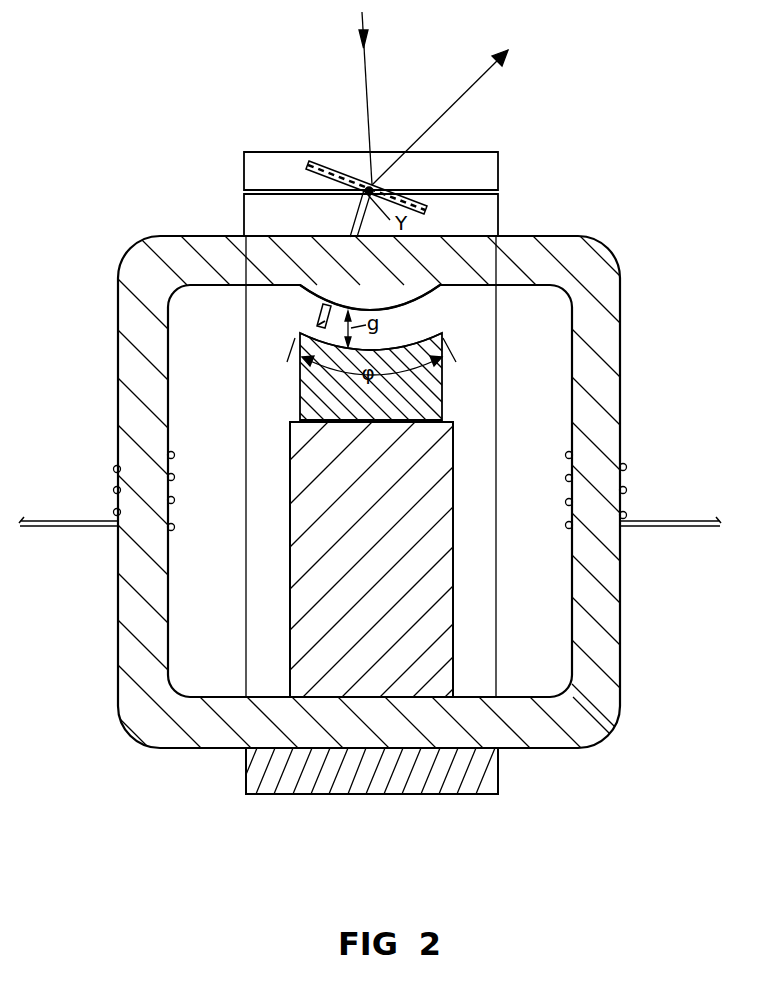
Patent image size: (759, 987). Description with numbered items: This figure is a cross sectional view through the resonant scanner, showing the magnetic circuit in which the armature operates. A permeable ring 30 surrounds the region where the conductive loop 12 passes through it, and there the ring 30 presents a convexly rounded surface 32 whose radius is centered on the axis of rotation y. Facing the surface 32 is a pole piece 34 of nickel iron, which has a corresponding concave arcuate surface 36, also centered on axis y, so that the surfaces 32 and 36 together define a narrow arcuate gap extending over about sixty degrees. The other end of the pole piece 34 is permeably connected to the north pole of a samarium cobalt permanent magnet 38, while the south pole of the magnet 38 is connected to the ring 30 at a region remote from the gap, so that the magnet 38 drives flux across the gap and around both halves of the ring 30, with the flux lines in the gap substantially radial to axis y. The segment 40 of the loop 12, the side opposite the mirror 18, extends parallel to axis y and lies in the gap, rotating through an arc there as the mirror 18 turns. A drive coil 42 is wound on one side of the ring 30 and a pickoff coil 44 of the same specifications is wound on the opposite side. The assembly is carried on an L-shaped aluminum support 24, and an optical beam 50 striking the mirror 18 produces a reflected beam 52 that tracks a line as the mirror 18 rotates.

The conductive loop 12 is at (352, 213).
The mirror 18 is at (420, 210).
The support 24 is at (392, 797).
The permeable ring 30 is at (621, 678).
The convexly rounded surface 32 is at (413, 302).
The pole piece 34 is at (442, 394).
The concave arcuate surface 36 is at (400, 340).
The permanent magnet 38 is at (453, 592).
The segment of loop 40 is at (316, 318).
The drive coil 42 is at (628, 490).
The pickoff coil 44 is at (115, 488).
The optical beam 50 is at (363, 78).
The reflected beam 52 is at (467, 97).